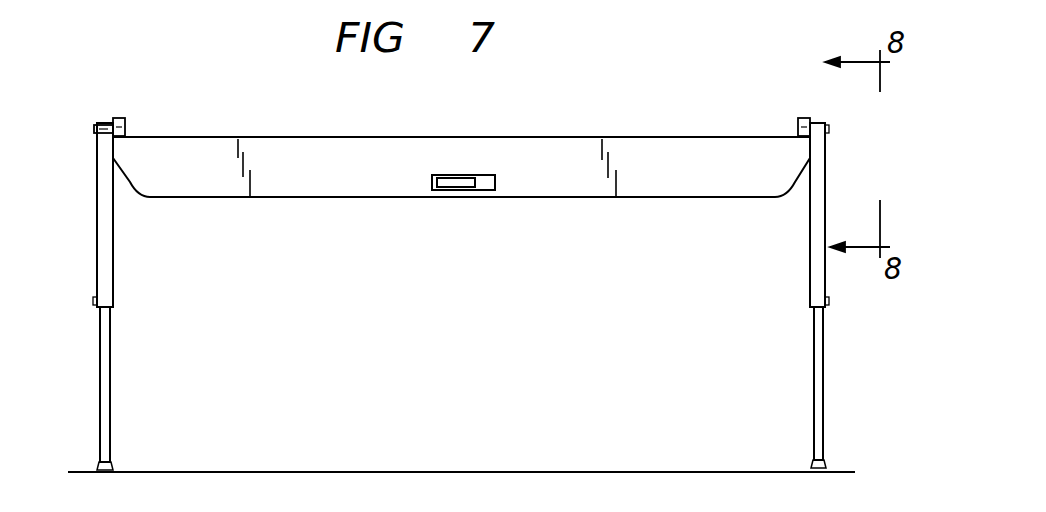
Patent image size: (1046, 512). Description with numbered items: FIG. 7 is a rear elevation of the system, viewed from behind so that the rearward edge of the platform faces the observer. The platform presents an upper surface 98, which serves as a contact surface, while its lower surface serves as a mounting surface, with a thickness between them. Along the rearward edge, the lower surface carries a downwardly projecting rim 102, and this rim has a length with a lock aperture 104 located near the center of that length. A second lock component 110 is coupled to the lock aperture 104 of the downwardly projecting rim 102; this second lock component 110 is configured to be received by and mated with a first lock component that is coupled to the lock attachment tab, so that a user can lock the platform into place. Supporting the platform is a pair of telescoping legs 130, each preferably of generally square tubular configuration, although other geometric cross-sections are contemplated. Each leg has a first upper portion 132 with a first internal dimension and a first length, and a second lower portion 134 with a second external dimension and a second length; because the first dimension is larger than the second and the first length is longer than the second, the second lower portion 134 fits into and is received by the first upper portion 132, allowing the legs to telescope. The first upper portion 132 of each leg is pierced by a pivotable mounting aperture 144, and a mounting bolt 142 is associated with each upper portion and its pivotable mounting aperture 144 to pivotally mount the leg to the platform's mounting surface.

The upper surface 98 is at (268, 201).
The downwardly projecting rim 102 is at (728, 183).
The lock aperture 104 is at (485, 174).
The second lock component 110 is at (453, 180).
The telescoping legs 130 is at (805, 327).
The first upper portion 132 is at (97, 212).
The second lower portion 134 is at (110, 395).
The mounting bolt 142 is at (97, 126).
The pivotable mounting aperture 144 is at (113, 120).